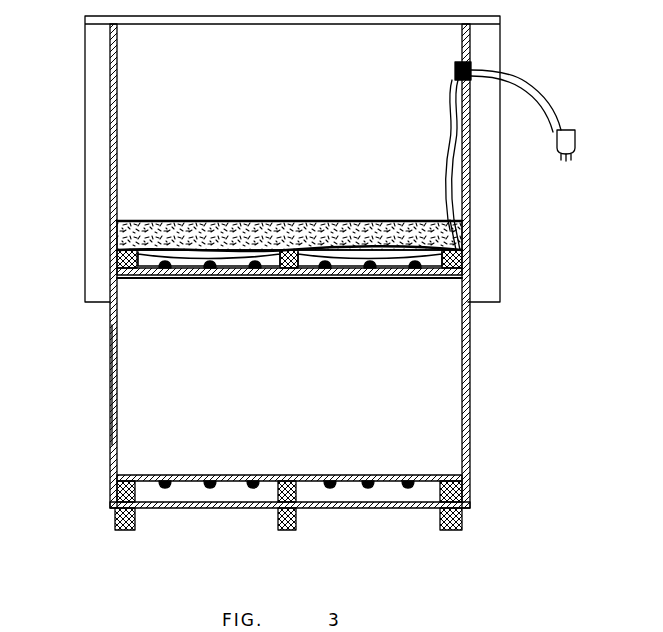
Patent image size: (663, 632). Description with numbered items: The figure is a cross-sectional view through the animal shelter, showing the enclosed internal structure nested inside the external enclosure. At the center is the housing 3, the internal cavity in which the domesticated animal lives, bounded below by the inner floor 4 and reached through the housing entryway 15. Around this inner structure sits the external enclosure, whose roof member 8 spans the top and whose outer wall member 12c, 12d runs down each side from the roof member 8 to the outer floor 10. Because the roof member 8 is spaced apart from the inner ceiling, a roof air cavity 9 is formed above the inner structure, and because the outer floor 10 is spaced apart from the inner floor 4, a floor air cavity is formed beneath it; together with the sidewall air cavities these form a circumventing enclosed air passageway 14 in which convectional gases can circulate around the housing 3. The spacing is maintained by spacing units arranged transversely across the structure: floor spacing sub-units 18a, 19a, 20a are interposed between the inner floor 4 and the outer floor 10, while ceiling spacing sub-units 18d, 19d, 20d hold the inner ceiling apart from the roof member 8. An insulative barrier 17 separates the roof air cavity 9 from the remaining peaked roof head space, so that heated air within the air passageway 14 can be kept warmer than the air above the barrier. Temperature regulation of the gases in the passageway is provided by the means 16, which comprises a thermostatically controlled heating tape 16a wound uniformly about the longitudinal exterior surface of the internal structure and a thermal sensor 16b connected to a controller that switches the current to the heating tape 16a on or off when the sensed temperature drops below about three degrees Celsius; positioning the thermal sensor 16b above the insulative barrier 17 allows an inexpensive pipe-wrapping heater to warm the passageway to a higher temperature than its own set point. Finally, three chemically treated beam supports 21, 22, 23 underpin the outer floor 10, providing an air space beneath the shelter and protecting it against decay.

The roof member 8 is at (85, 80).
The outer wall member 12c is at (115, 139).
The outer wall member 12d is at (470, 355).
The housing entryway 15 is at (110, 398).
The means for regulating the temperature 16 is at (567, 119).
The thermal sensor 16b is at (450, 185).
The insulative barrier 17 is at (208, 224).
The roof air cavity 9 is at (342, 260).
The ceiling spacing sub-unit 18d is at (116, 262).
The ceiling spacing sub-unit 19d is at (292, 276).
The ceiling spacing sub-unit 20d is at (470, 256).
The air passageway 14 is at (156, 274).
The heating tape 16a is at (254, 276).
The housing 3 is at (289, 394).
The inner floor 4 is at (234, 476).
The outer floor 10 is at (234, 508).
The floor spacing sub-unit 18a is at (118, 491).
The floor spacing sub-unit 19a is at (288, 501).
The floor spacing sub-unit 20a is at (444, 500).
The beam support 21 is at (126, 530).
The beam support 22 is at (292, 530).
The beam support 23 is at (454, 530).